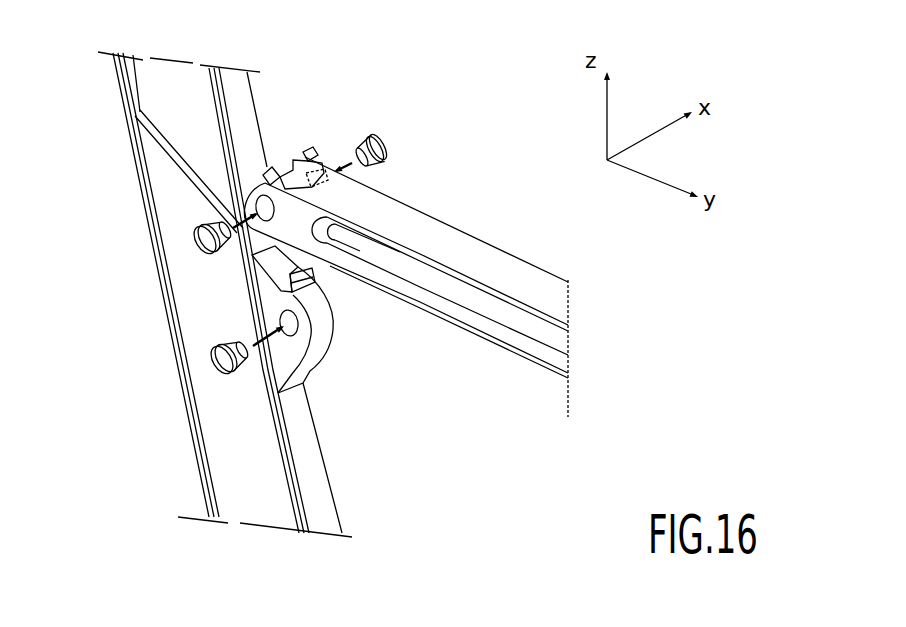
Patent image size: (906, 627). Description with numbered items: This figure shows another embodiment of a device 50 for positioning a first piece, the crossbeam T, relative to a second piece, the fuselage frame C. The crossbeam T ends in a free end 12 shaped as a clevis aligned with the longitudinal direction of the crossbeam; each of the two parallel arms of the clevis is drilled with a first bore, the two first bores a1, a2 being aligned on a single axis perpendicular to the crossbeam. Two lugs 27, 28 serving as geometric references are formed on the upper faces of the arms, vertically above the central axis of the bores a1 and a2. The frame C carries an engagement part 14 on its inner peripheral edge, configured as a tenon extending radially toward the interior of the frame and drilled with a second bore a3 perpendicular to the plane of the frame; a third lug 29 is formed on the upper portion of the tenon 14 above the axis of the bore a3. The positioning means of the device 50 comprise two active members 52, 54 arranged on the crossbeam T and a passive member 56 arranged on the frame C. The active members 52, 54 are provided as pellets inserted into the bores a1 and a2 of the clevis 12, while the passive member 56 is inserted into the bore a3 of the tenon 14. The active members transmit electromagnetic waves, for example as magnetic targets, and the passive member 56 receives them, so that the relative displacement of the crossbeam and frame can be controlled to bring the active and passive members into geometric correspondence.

The free end 12 is at (262, 160).
The fuselage frame C is at (195, 457).
The positioning device 50 is at (406, 290).
The crossbeam T is at (483, 268).
The first bore a2 is at (252, 200).
The active member 54 is at (188, 243).
The second bore a3 is at (279, 317).
The passive member 56 is at (205, 362).
The third lug 29 is at (252, 272).
The engagement part 14 is at (326, 358).
The lug 28 is at (268, 168).
The lug 27 is at (309, 152).
The first bore a1 is at (304, 184).
The active member 52 is at (388, 140).